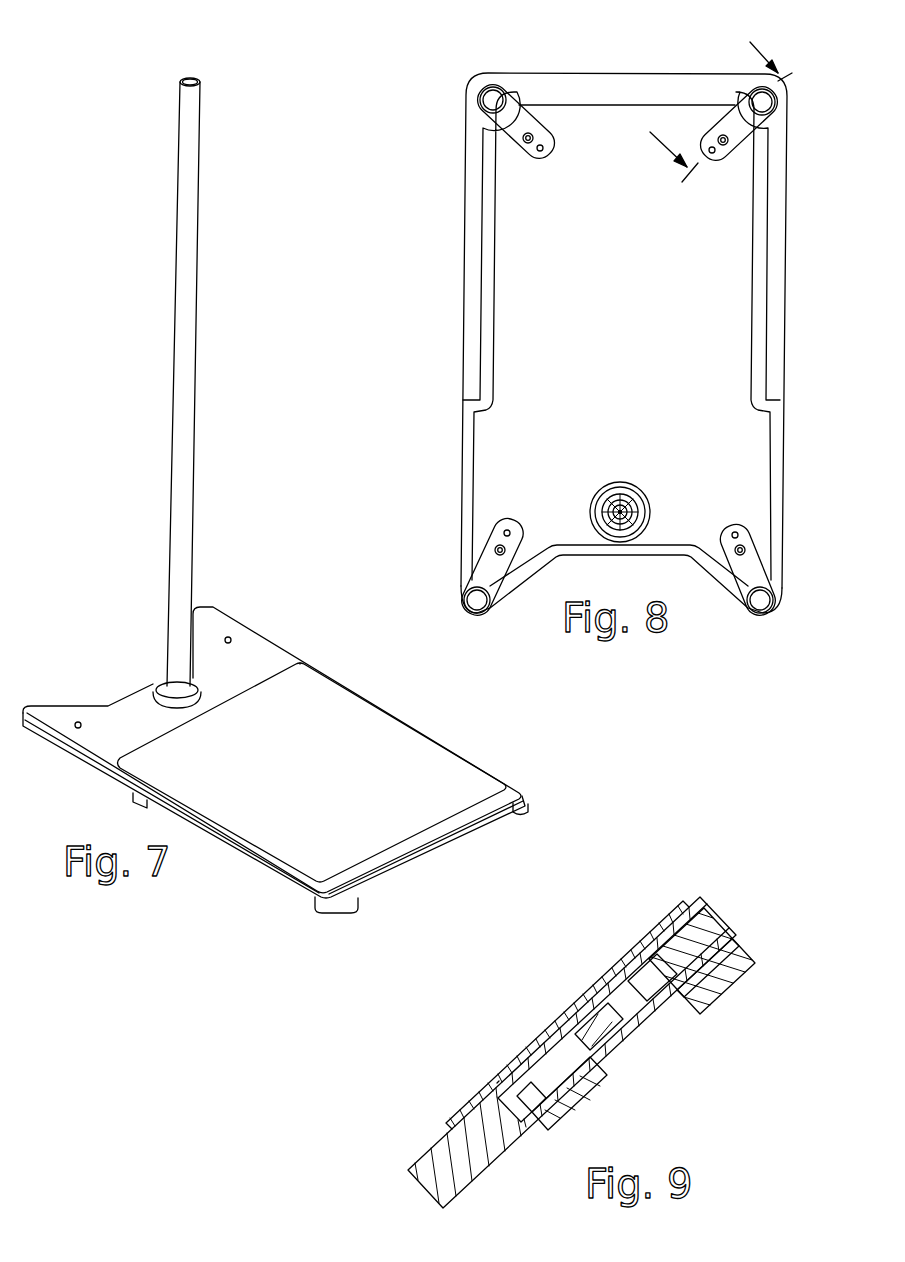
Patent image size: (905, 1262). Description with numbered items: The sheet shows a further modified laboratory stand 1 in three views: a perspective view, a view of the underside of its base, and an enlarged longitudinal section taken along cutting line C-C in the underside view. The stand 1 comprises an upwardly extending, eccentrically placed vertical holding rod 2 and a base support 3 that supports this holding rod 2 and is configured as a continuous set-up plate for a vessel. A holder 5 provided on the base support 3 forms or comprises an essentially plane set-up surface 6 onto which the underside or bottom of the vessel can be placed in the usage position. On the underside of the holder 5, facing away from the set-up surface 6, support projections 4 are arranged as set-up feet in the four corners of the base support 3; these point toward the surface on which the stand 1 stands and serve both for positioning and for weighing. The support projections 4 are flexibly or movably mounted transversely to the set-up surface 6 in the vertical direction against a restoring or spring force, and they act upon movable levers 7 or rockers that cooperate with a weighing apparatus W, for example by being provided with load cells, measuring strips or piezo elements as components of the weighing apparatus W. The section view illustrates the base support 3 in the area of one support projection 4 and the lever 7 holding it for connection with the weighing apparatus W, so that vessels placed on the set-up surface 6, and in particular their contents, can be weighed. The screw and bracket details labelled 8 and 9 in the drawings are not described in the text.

In FIG. 7, the laboratory stand 1 is at (138, 533).
In FIG. 8, the laboratory stand 1 is at (447, 262).
In FIG. 7, the holding rod 2 is at (186, 330).
In FIG. 8, the holding rod 2 is at (637, 508).
In FIG. 7, the base support 3 is at (338, 672).
In FIG. 8, the base support 3 is at (455, 312).
In FIG. 9, the base support 3 is at (723, 887).
In FIG. 7, the support projection 4 is at (327, 912).
In FIG. 8, the support projection 4 is at (494, 98).
In FIG. 9, the support projection 4 is at (710, 972).
In FIG. 7, the holder 5 is at (352, 716).
In FIG. 9, the holder 5 is at (625, 960).
In FIG. 7, the set-up surface 6 is at (368, 777).
In FIG. 9, the set-up surface 6 is at (497, 1083).
In FIG. 9, the lever 7 is at (650, 987).
In FIG. 8, the screw 8 is at (745, 132).
In FIG. 9, the screw 8 is at (597, 1040).
In FIG. 8, the bracket 9 is at (717, 163).
In FIG. 9, the bracket 9 is at (560, 1107).
In FIG. 8, the cutting line C- C is at (711, 98).
In FIG. 9, the weighing apparatus W is at (673, 1007).